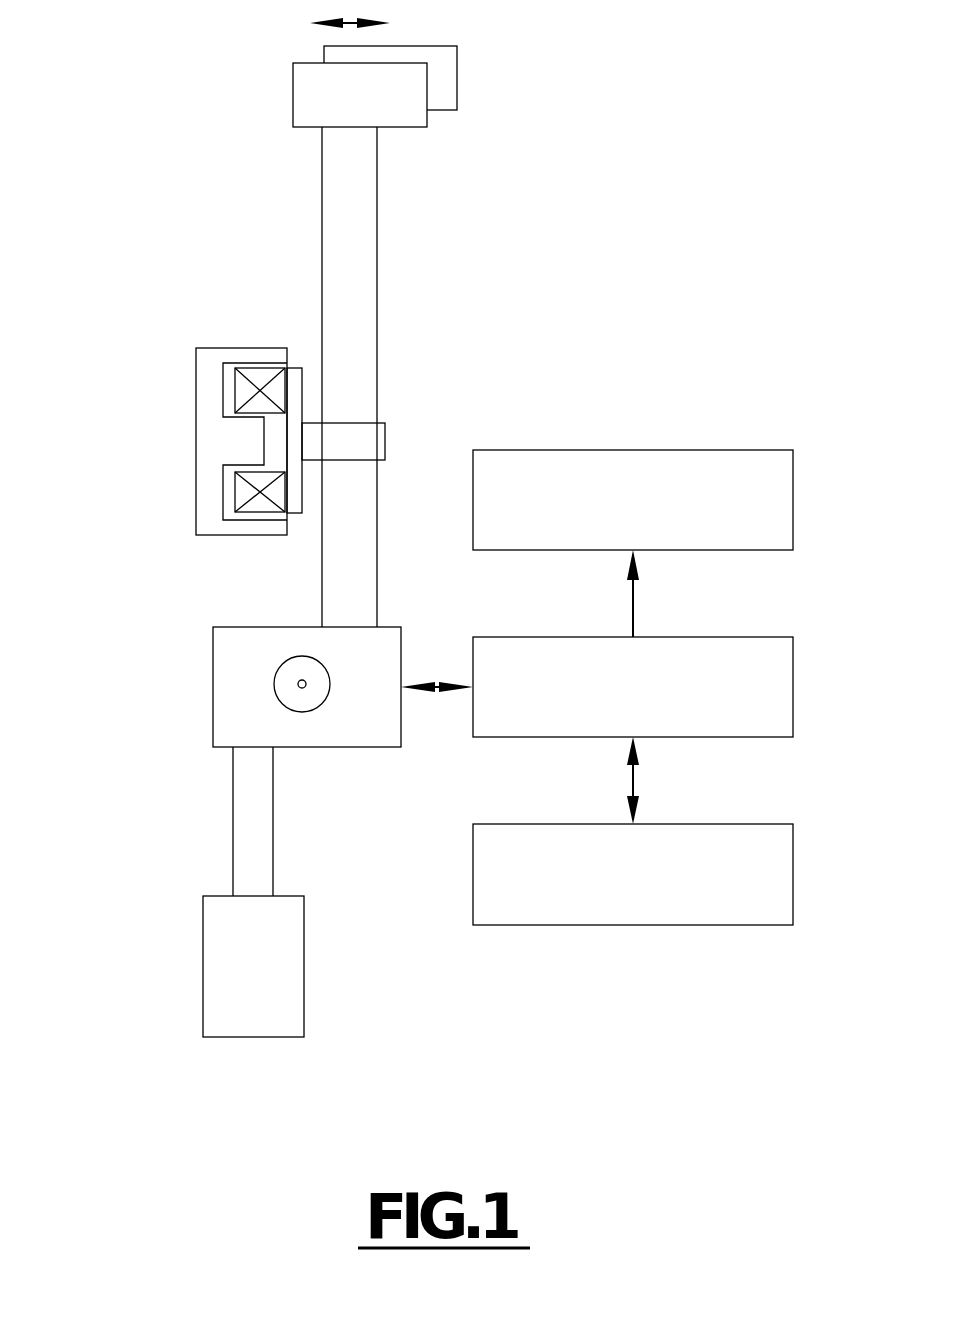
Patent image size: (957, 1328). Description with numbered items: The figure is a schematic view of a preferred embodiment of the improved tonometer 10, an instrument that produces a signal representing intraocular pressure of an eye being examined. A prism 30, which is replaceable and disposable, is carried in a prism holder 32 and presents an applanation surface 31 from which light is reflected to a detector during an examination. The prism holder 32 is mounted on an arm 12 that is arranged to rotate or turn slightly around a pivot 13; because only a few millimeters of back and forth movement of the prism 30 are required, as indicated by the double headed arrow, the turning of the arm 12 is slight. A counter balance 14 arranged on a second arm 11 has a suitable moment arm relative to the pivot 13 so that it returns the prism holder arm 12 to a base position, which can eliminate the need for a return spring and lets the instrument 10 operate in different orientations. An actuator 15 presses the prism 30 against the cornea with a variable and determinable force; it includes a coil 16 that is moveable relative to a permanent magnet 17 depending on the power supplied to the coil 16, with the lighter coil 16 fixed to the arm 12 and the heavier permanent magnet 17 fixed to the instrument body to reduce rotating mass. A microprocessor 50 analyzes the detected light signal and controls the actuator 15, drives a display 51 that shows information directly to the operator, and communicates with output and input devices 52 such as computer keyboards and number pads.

The tonometer 10 is at (548, 55).
The arm 11 is at (254, 783).
The arm 12 is at (357, 313).
The pivot 13 is at (302, 684).
The counter balance 14 is at (234, 953).
The actuator 15 is at (160, 320).
The coil 16 is at (250, 490).
The permanent magnet 17 is at (197, 416).
The prism 30 is at (427, 47).
The applanation surface 31 is at (457, 82).
The prism holder 32 is at (310, 106).
The microprocessor 50 is at (770, 655).
The display 51 is at (770, 490).
The output and input devices 52 is at (770, 864).